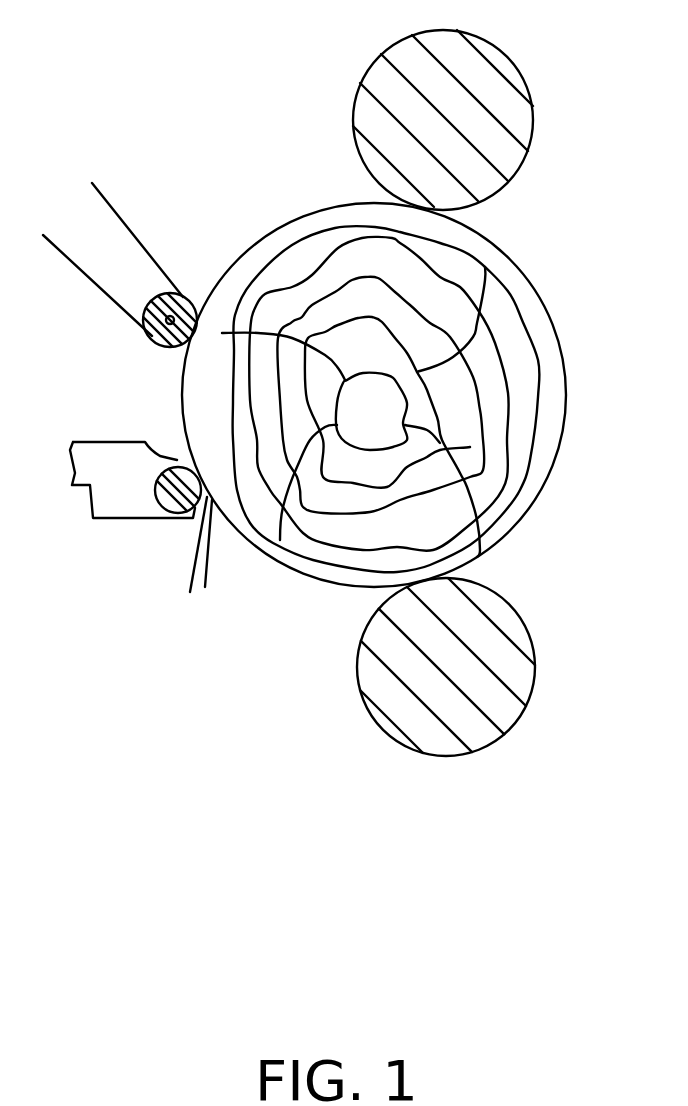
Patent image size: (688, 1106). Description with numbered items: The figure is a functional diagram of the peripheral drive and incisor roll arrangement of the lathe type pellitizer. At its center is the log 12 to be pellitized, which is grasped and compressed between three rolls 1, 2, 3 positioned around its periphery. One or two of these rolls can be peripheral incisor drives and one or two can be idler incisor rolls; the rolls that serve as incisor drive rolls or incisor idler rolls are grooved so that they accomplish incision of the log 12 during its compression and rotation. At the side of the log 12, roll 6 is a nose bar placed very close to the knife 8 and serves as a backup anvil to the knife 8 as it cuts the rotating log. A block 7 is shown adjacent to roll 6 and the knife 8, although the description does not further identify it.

The roll 1 is at (523, 80).
The roll 2 is at (532, 638).
The roll 3 is at (183, 295).
The nose bar 6 is at (167, 472).
The support block 7 is at (145, 518).
The knife 8 is at (213, 540).
The log 12 is at (533, 493).